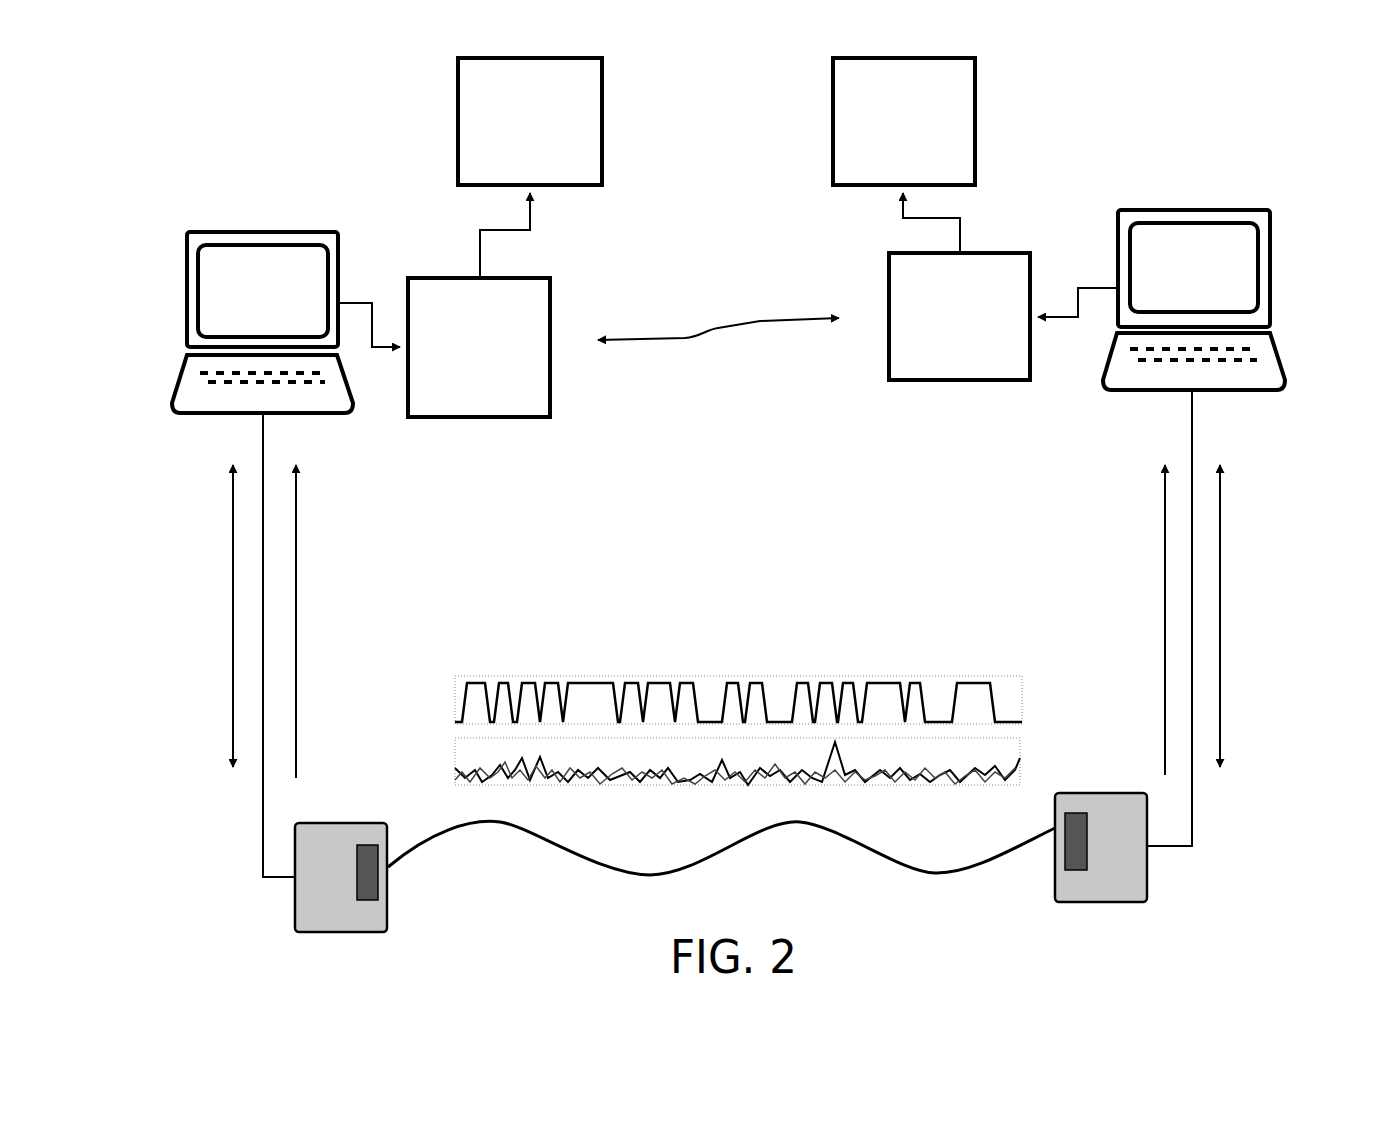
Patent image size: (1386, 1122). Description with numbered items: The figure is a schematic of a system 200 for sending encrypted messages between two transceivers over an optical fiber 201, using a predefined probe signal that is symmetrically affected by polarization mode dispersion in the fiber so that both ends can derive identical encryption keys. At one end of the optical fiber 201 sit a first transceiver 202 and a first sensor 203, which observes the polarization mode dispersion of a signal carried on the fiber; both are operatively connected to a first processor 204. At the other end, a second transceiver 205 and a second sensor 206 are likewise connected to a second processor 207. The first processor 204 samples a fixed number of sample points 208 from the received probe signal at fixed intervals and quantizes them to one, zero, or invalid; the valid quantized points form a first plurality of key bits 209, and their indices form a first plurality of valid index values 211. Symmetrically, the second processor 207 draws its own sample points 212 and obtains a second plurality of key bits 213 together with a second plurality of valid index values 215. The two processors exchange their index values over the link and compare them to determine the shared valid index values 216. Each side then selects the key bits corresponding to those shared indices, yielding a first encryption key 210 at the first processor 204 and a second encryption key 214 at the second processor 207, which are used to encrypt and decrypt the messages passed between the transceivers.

The system 200 is at (240, 108).
The optical fiber 201 is at (612, 868).
The first transceiver 202 is at (324, 837).
The first sensor 203 is at (375, 885).
The first processor 204 is at (270, 290).
The second transceiver 205 is at (1124, 810).
The second sensor 206 is at (1062, 868).
The second processor 207 is at (1205, 275).
The sample points 208 is at (296, 592).
The first plurality of key bits 209 is at (483, 420).
The first encryption key 210 is at (458, 118).
The first plurality of valid index values 211 is at (233, 622).
The sample points 212 is at (1165, 590).
The second plurality of key bits 213 is at (960, 383).
The second encryption key 214 is at (975, 120).
The second plurality of valid index values 215 is at (1222, 594).
The shared valid index values 216 is at (688, 335).